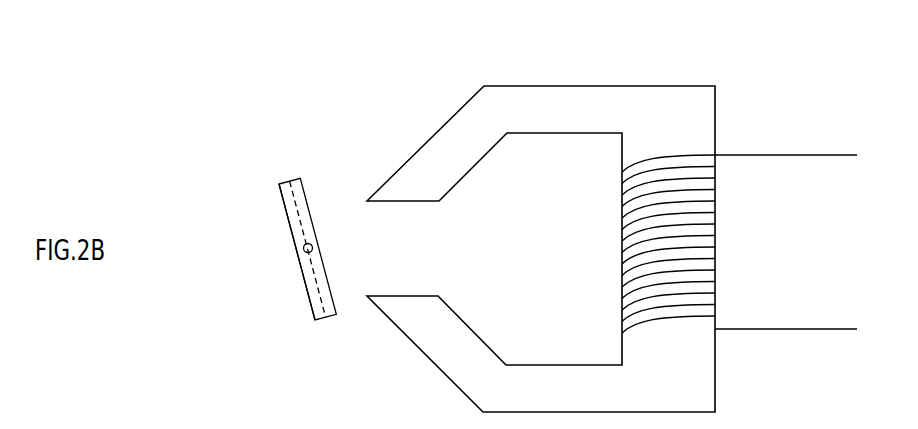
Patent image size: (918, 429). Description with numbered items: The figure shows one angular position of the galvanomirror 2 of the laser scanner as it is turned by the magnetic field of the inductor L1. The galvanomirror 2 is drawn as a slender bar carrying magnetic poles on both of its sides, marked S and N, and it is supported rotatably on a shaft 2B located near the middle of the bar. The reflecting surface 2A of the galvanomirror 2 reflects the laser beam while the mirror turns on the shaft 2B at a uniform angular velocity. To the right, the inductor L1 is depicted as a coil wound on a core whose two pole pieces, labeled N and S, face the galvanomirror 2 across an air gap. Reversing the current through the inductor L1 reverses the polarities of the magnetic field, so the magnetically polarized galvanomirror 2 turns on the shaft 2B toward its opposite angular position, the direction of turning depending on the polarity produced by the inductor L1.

The galvanomirror 2 is at (300, 178).
The reflecting surface 2A is at (282, 210).
The shaft 2B is at (302, 248).
The inductor L1 is at (668, 98).